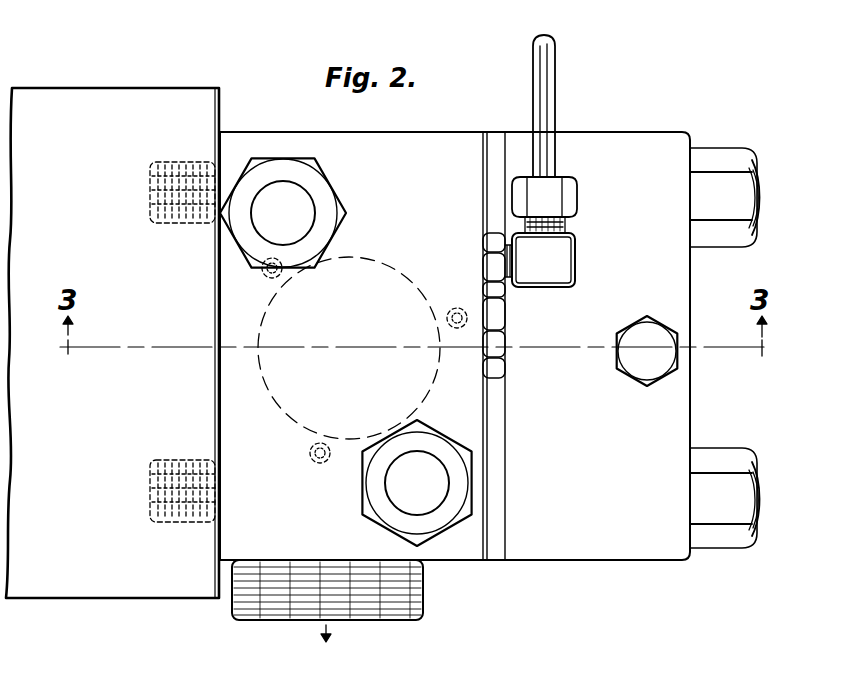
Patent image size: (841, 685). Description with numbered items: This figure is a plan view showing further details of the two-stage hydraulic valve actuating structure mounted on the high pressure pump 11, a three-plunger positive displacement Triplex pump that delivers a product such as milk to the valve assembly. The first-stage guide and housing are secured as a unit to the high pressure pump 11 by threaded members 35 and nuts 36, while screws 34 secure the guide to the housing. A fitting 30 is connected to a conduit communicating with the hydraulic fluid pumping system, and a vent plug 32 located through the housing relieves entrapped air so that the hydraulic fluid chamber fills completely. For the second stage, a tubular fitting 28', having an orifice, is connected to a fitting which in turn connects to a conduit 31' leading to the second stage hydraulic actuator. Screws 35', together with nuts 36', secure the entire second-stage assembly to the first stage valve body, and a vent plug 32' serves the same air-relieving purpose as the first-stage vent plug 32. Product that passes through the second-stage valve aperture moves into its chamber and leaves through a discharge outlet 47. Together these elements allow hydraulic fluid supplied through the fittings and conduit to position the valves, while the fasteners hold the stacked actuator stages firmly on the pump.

The high pressure pump 11 is at (32, 596).
The threaded members 35 is at (460, 289).
The nuts 36 is at (725, 332).
The nuts 36' is at (283, 181).
The screws 35' is at (330, 178).
The tubular fitting 28' is at (467, 346).
The fitting 30 is at (570, 274).
The conduit 31' is at (566, 106).
The vent plug 32 is at (641, 361).
The vent plug 32' is at (514, 316).
The screws 34 is at (266, 282).
The discharge outlet 47 is at (386, 622).